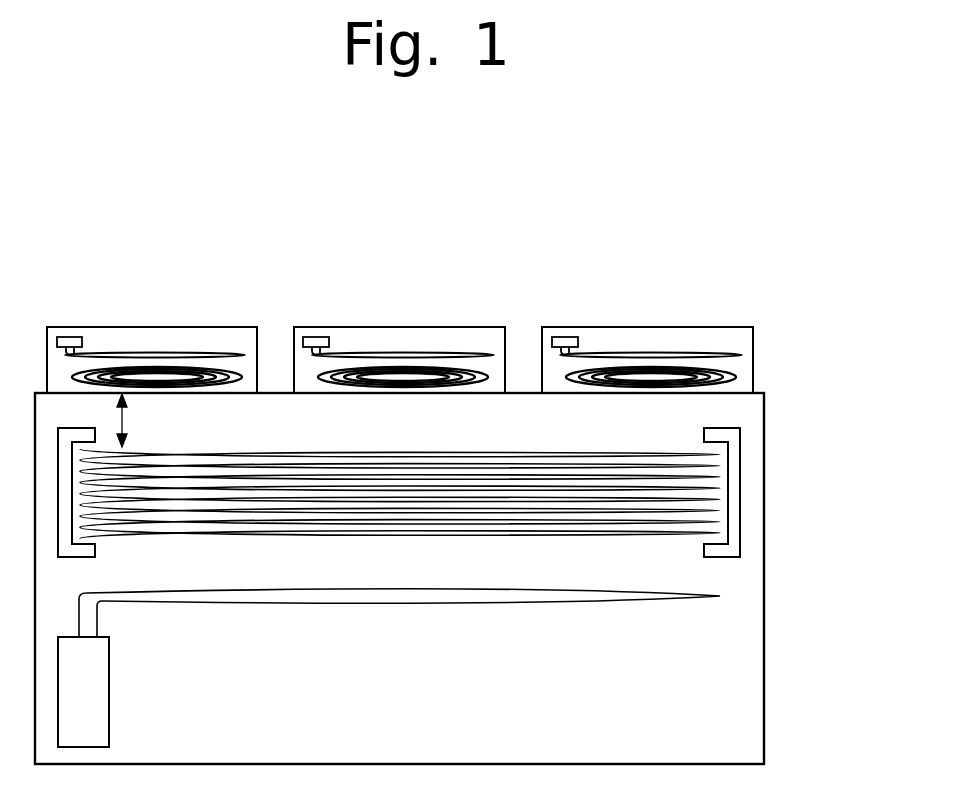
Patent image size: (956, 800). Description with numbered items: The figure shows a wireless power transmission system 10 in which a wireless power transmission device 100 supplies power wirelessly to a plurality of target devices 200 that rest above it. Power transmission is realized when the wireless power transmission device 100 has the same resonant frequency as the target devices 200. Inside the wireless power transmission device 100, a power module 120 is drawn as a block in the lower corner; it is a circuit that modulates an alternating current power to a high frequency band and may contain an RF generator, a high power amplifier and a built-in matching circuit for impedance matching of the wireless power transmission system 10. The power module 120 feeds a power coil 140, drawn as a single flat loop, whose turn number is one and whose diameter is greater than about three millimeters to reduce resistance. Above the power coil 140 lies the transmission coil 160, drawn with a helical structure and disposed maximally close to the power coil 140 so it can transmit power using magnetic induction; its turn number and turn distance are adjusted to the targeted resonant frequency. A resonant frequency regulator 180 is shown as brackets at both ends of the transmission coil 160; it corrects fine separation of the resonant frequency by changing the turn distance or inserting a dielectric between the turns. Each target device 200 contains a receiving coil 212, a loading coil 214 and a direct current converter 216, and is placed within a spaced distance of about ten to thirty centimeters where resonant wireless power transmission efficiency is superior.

The wireless power transmission system 10 is at (672, 195).
The wireless power transmission device 100 is at (764, 577).
The power module 120 is at (109, 690).
The power coil 140 is at (402, 603).
The transmission coil 160 is at (483, 540).
The resonant frequency regulator 180 is at (740, 493).
The target device 200 is at (232, 327).
The receiving coil 212 is at (182, 368).
The loading coil 214 is at (127, 352).
The direct current converter 216 is at (69, 338).